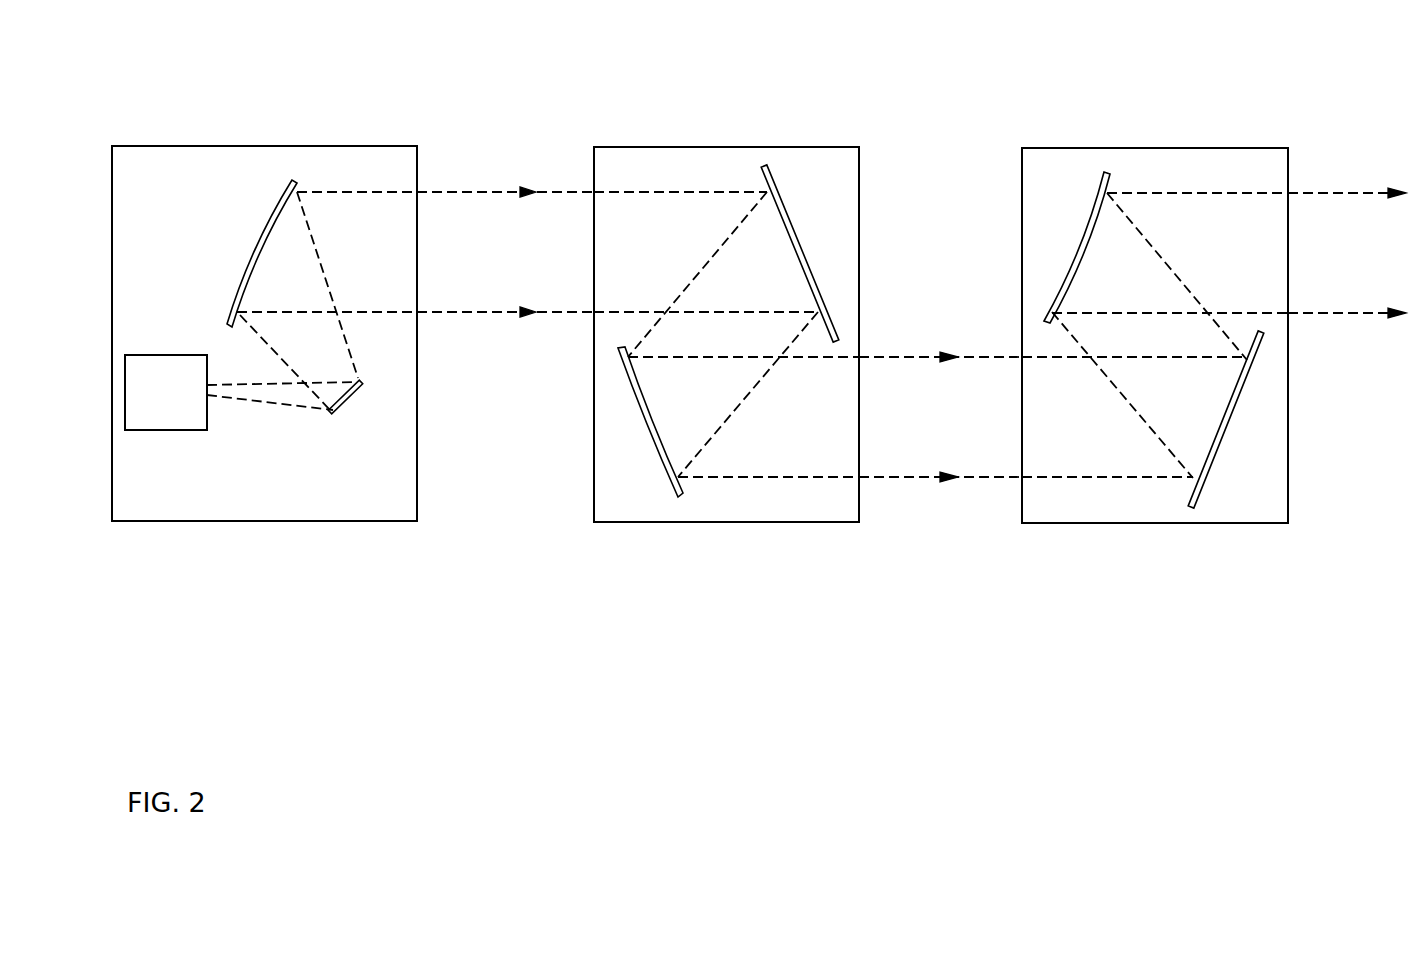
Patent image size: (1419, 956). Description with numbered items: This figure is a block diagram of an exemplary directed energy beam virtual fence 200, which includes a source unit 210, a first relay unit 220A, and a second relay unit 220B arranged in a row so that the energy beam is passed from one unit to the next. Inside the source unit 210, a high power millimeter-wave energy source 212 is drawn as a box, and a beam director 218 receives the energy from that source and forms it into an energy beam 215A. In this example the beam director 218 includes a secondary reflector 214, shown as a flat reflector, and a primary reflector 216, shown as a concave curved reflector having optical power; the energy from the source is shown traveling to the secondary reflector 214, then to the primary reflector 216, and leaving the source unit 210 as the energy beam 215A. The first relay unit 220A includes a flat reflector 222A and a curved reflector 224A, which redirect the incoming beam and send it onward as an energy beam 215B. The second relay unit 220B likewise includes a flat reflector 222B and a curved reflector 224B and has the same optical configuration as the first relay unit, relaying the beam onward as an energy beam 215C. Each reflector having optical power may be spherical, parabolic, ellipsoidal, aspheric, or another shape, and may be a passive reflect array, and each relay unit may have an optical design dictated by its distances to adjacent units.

The directed energy beam virtual fence 200 is at (199, 73).
The source unit 210 is at (255, 521).
The seed laser 212 is at (166, 392).
The secondary reflector 214 is at (340, 413).
The primary reflector 216 is at (238, 287).
The beam director 218 is at (240, 218).
The energy beam 215A is at (501, 252).
The first relay unit 220A is at (727, 522).
The flat reflector 222A is at (760, 178).
The curved reflector 224A is at (683, 495).
The energy beam 215B is at (940, 417).
The second relay unit 220B is at (1155, 523).
The flat reflector 222B is at (1190, 503).
The curved reflector 224B is at (1112, 176).
The energy beam 215C is at (1351, 253).